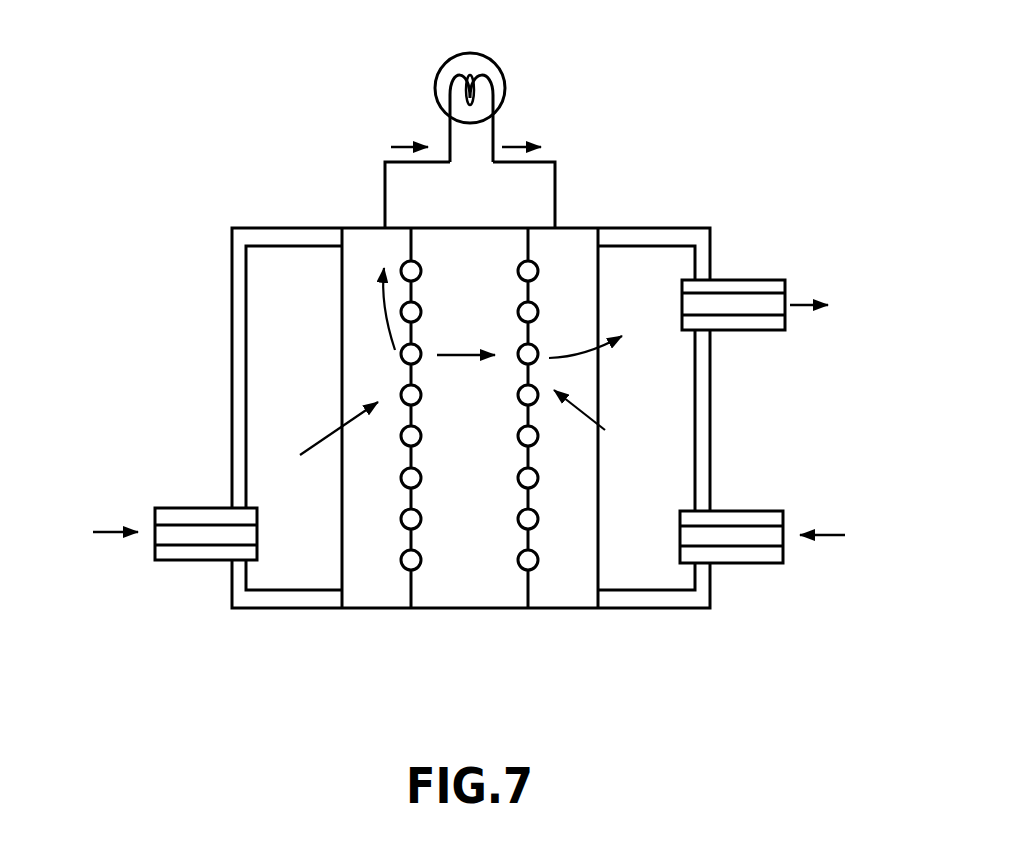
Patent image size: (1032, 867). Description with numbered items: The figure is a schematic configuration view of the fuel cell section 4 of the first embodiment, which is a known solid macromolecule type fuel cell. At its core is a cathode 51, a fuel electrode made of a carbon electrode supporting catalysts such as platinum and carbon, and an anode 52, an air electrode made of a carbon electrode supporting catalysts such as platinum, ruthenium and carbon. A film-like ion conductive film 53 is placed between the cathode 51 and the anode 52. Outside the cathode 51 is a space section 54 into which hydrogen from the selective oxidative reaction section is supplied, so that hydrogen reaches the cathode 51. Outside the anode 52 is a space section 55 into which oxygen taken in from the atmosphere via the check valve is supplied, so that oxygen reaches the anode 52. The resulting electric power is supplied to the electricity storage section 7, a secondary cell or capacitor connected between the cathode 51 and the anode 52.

The fuel cell section 4 is at (637, 172).
The electricity storage section 7 is at (495, 62).
The cathode 51 is at (382, 594).
The anode 52 is at (562, 594).
The ion conductive film 53 is at (470, 594).
The space section 54 is at (273, 345).
The space section 55 is at (683, 383).